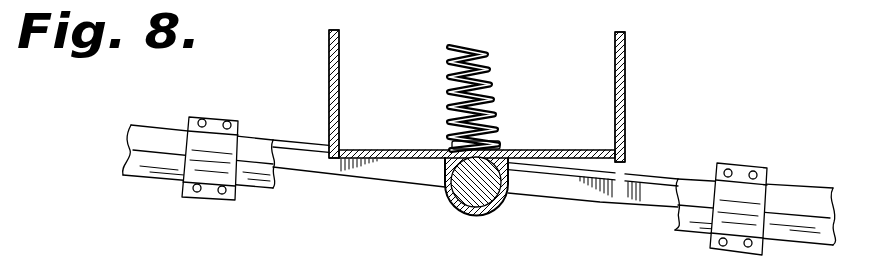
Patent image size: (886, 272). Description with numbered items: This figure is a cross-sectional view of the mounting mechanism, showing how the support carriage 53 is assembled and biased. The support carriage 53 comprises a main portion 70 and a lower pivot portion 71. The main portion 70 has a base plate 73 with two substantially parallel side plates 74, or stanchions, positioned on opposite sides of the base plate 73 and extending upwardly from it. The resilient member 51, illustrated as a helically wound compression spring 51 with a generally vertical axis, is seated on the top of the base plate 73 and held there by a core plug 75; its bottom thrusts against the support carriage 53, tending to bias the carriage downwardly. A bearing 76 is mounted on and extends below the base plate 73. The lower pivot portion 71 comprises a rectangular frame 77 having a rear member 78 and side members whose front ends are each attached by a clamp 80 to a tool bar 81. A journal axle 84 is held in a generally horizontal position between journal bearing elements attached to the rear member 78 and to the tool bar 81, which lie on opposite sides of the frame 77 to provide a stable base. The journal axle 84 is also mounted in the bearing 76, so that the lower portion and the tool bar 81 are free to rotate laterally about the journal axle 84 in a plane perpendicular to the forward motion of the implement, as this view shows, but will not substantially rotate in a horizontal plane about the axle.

The resilient member 51 is at (500, 78).
The support carriage 53 is at (626, 112).
The main portion 70 is at (329, 53).
The lower pivot portion 71 is at (436, 159).
The base plate 73 is at (553, 150).
The side plates 74 is at (340, 80).
The core plug 75 is at (455, 136).
The bearing 76 is at (497, 199).
The rectangular frame 77 is at (662, 177).
The rear member 78 is at (661, 198).
The clamp 80 is at (210, 117).
The tool bar 81 is at (166, 137).
The journal axle 84 is at (468, 213).